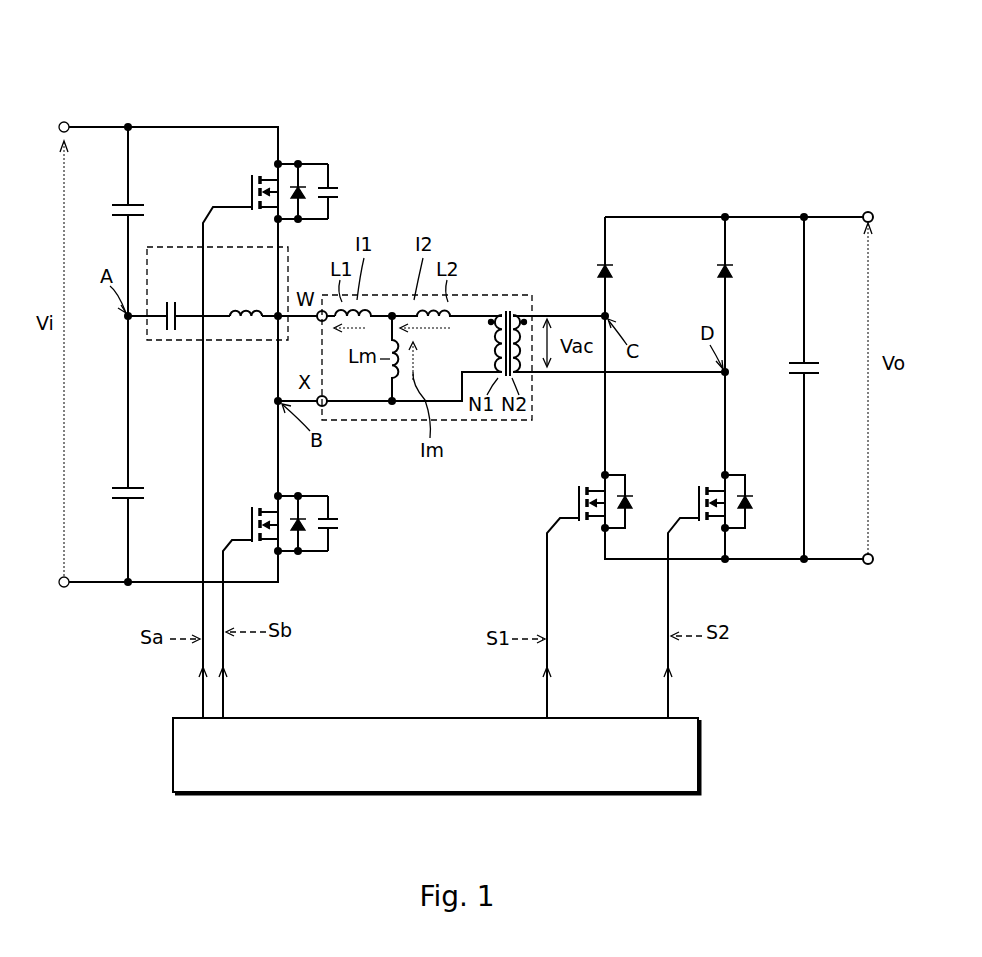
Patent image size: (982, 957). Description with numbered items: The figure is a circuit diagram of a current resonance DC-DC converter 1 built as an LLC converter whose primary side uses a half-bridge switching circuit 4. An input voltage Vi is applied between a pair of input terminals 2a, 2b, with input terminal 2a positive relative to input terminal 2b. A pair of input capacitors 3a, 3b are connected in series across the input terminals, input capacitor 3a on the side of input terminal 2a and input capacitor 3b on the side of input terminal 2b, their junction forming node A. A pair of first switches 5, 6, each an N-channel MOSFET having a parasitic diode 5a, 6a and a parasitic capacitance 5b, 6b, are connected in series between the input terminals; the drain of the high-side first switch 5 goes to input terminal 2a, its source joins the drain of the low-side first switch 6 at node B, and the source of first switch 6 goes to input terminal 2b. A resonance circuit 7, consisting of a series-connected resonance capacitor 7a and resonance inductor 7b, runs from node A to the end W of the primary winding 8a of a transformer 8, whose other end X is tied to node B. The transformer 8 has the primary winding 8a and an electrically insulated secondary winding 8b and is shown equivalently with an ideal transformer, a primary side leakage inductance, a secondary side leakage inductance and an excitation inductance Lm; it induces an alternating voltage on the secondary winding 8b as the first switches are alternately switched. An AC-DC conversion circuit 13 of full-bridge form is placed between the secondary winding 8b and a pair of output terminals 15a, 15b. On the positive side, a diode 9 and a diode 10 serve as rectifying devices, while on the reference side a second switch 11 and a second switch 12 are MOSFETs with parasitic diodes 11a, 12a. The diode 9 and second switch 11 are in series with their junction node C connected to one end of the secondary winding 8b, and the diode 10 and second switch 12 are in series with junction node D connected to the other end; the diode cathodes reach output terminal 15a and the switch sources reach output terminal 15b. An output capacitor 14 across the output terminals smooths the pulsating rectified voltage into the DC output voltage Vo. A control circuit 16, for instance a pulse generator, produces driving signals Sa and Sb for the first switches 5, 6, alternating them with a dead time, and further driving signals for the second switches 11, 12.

The DC-DC converter 1 is at (447, 30).
The input terminal 2a is at (66, 121).
The input terminal 2b is at (66, 589).
The input capacitor 3a is at (134, 207).
The input capacitor 3b is at (134, 487).
The switching circuit 4 is at (271, 88).
The first switch 5 is at (273, 178).
The parasitic diode 5a is at (299, 182).
The parasitic capacitance 5b is at (331, 186).
The first switch 6 is at (273, 510).
The parasitic diode 6a is at (301, 541).
The parasitic capacitance 6b is at (332, 541).
The resonance circuit 7 is at (170, 251).
The resonance capacitor 7a is at (170, 300).
The resonance inductor 7b is at (246, 306).
The transformer 8 is at (452, 227).
The primary winding 8a is at (477, 310).
The secondary winding 8b is at (524, 310).
The diode 9 is at (610, 268).
The diode 10 is at (730, 268).
The second switch 11 is at (573, 492).
The parasitic diode 11a is at (628, 493).
The second switch 12 is at (694, 492).
The parasitic diode 12a is at (748, 493).
The AC-DC conversion circuit 13 is at (687, 180).
The output capacitor 14 is at (810, 361).
The output terminal 15a is at (866, 209).
The output terminal 15b is at (866, 568).
The control circuit 16 is at (697, 716).